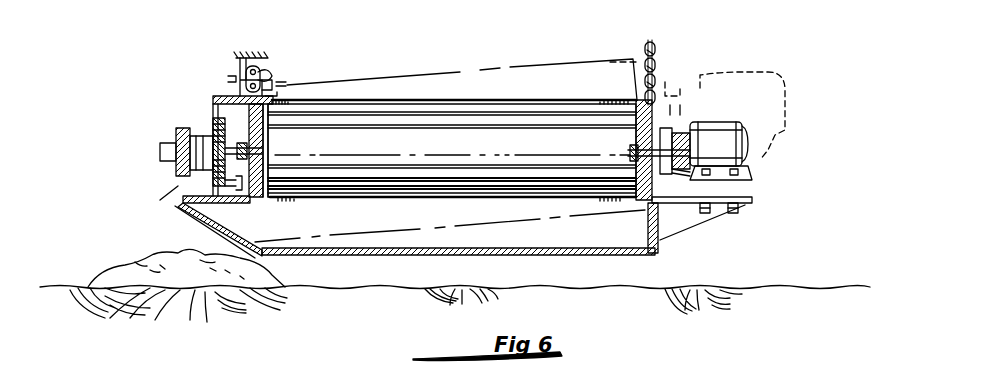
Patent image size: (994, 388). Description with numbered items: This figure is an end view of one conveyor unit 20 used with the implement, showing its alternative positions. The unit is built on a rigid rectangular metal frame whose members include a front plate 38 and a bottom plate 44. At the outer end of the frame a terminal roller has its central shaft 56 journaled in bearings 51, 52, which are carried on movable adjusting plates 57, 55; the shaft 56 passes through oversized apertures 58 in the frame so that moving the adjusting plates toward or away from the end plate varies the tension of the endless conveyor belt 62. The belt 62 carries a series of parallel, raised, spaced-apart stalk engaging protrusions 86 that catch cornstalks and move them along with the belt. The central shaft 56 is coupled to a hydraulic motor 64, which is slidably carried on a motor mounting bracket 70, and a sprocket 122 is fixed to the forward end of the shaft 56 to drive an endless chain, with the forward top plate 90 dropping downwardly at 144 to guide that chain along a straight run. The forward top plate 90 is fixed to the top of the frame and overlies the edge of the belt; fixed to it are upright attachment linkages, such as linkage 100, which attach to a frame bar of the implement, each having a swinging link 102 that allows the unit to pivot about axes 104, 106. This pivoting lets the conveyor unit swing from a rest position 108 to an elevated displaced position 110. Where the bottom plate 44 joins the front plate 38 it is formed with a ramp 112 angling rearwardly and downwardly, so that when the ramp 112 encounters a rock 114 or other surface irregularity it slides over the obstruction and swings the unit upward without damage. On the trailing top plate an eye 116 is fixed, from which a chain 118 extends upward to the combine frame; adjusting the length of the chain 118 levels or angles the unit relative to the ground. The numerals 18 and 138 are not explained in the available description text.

The frame 18 is at (349, 284).
The conveyor unit 20 is at (565, 72).
The front plate 38 is at (282, 170).
The bottom plate 44 is at (433, 250).
The bearing 51 is at (690, 170).
The bearing 52 is at (186, 131).
The adjusting plate 55 is at (182, 164).
The central shaft 56 is at (175, 149).
The adjusting plate 57 is at (660, 84).
The oversized apertures 58 is at (279, 138).
The conveyor belt 62 is at (527, 152).
The hydraulic motor 64 is at (750, 132).
The motor mounting bracket 70 is at (750, 201).
The stalk engaging protrusions 86 is at (519, 100).
The forward top plate 90 is at (234, 96).
The upright attachment linkage 100 is at (287, 86).
The swinging link 102 is at (278, 75).
The axis 104 is at (270, 82).
The axis 106 is at (258, 68).
The rest position 108 is at (652, 246).
The elevated displaced position 110 is at (508, 72).
The ramp 112 is at (192, 216).
The rock 114 is at (126, 257).
The eye 116 is at (634, 104).
The chain 118 is at (655, 50).
The sprocket 122 is at (200, 178).
The gear housing 138 is at (170, 192).
The drop of forward top plate 144 is at (214, 104).